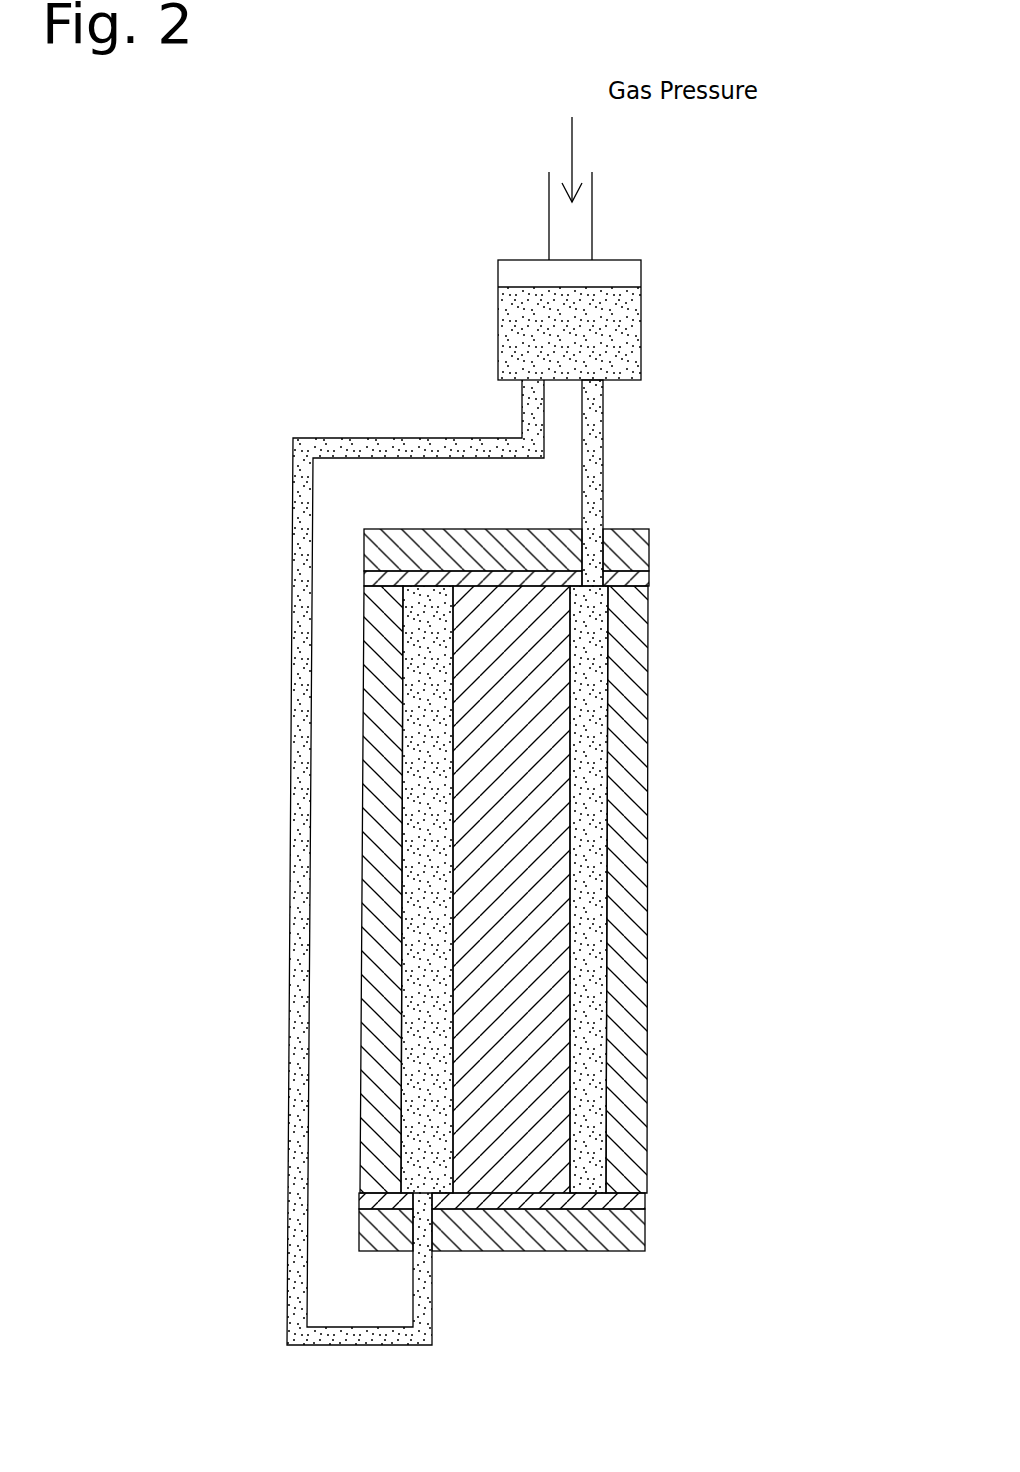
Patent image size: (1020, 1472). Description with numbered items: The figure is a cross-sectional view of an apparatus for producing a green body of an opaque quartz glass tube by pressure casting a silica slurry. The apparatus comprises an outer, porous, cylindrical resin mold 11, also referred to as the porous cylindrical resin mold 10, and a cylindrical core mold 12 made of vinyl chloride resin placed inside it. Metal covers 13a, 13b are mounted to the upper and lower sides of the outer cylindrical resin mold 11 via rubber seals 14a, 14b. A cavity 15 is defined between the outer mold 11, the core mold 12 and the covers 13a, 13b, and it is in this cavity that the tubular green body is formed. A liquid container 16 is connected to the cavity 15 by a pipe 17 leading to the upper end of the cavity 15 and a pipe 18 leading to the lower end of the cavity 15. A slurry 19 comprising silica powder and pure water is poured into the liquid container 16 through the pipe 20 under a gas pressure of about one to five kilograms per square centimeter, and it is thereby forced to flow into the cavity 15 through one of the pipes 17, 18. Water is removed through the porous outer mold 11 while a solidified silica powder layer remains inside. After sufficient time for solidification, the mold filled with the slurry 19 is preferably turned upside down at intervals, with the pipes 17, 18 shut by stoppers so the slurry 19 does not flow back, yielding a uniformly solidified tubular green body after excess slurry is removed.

The porous cylindrical resin mold 10 is at (670, 925).
The outer porous cylindrical resin mold 11 is at (648, 862).
The cylindrical core mold 12 is at (525, 1022).
The metal cover 13a is at (650, 548).
The metal cover 13b is at (645, 1238).
The rubber seal 14a is at (650, 580).
The rubber seal 14b is at (645, 1200).
The cavity 15 is at (593, 770).
The liquid container 16 is at (498, 273).
The pipe 17 is at (603, 465).
The pipe 18 is at (291, 790).
The slurry 19 is at (513, 357).
The pipe 20 is at (592, 230).